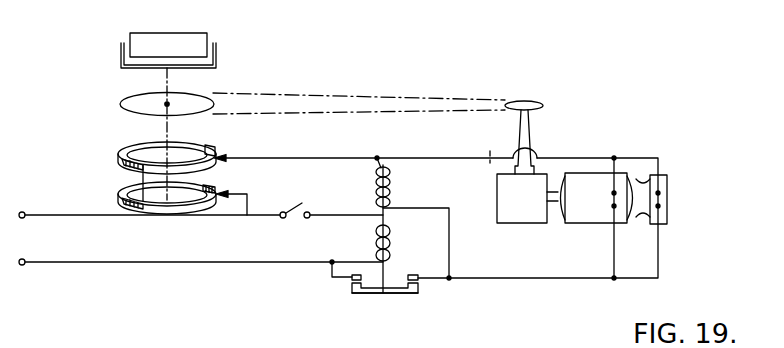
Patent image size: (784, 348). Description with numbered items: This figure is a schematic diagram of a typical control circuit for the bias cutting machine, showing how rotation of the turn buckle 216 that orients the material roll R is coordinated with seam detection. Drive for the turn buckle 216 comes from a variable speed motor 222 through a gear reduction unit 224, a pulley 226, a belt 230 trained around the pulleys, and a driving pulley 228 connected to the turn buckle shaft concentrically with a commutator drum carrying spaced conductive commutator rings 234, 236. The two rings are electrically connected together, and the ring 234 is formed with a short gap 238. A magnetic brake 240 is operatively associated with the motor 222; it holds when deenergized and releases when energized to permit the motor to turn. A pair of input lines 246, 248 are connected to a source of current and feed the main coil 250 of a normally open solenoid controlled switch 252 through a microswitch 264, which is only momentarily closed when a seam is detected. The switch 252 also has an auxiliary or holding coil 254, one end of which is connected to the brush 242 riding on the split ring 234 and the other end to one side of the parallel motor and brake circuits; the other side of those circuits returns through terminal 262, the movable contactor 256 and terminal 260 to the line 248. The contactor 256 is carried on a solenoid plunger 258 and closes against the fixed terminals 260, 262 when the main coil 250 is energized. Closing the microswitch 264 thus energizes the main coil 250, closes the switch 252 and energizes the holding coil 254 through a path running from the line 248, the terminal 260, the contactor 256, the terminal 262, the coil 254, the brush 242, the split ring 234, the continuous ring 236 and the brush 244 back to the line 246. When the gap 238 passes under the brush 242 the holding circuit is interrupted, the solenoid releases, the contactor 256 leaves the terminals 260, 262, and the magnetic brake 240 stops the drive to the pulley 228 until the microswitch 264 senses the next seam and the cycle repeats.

The roll R is at (187, 34).
The turn buckle 216 is at (216, 53).
The pulley 228 is at (121, 97).
The belt 230 is at (327, 94).
The pulley 226 is at (545, 103).
The gear reduction unit 224 is at (513, 218).
The variable speed motor 222 is at (588, 216).
The magnetic brake 240 is at (668, 181).
The commutator ring 234 is at (120, 153).
The commutator ring 236 is at (118, 195).
The gap 238 is at (211, 147).
The brush 242 is at (225, 162).
The brush 244 is at (228, 191).
The input line 246 is at (44, 221).
The input line 248 is at (57, 263).
The microswitch 264 is at (300, 203).
The holding coil 254 is at (390, 187).
The main coil 250 is at (378, 243).
The solenoid plunger 258 is at (386, 268).
The terminal 260 is at (349, 279).
The terminal 262 is at (415, 274).
The solenoid controlled switch 252 is at (349, 299).
The movable contactor 256 is at (392, 294).